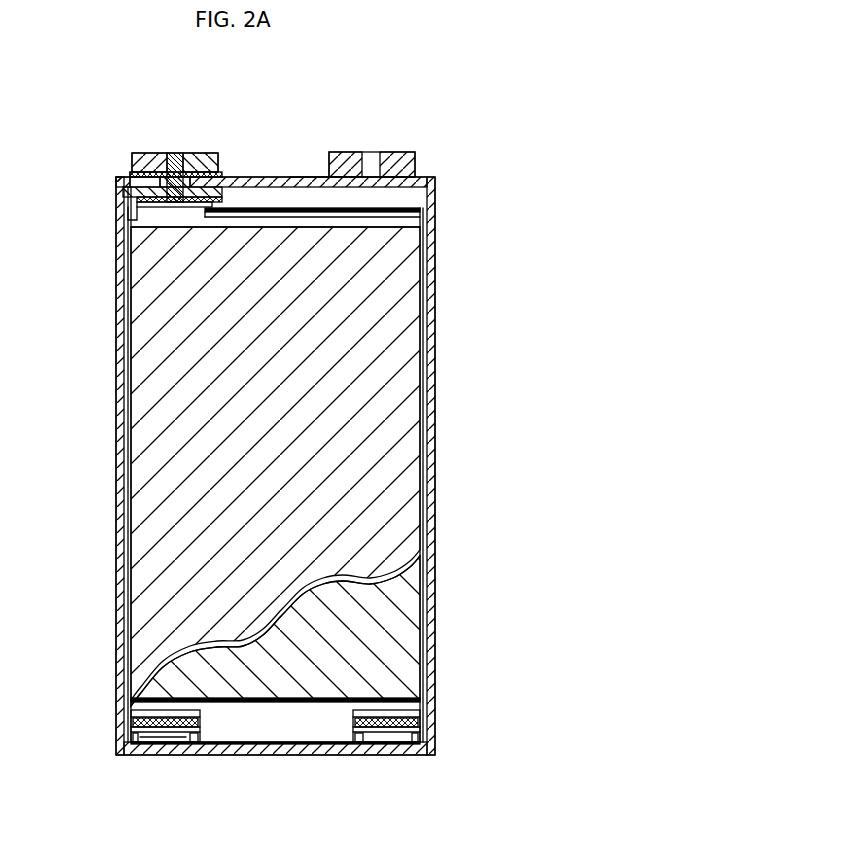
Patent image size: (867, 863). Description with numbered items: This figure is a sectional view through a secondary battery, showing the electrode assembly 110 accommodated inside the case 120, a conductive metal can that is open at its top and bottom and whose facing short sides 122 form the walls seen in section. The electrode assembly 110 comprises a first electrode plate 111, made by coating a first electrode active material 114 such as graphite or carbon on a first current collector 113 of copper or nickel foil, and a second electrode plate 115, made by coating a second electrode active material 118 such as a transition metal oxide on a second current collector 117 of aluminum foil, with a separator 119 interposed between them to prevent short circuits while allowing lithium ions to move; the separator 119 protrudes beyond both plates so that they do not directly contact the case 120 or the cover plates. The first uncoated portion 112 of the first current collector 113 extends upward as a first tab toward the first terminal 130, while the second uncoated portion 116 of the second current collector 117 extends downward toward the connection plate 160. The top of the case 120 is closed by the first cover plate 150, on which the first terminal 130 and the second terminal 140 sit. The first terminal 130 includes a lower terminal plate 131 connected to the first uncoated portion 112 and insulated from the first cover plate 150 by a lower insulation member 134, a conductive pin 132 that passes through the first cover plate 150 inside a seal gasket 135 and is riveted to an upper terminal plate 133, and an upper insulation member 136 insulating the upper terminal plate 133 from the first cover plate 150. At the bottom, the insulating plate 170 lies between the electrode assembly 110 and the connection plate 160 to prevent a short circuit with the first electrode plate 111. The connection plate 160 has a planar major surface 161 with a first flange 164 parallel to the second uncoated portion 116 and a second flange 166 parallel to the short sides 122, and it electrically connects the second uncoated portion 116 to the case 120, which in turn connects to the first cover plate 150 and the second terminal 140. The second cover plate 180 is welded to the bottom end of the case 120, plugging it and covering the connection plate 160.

The electrode assembly 110 is at (436, 477).
The first electrode plate 111 is at (405, 295).
The first uncoated portion 112 is at (210, 182).
The first current collector 113 is at (410, 222).
The first electrode active material 114 is at (403, 311).
The second electrode plate 115 is at (398, 604).
The second uncoated portion 116 is at (279, 750).
The second current collector 117 is at (418, 706).
The second electrode active material 118 is at (405, 637).
The separator 119 is at (413, 210).
The case 120 is at (337, 471).
The short sides 122 is at (423, 420).
The first terminal 130 is at (139, 164).
The lower terminal plate 131 is at (177, 207).
The conductive pin 132 is at (175, 154).
The upper terminal plate 133 is at (203, 160).
The lower insulation member 134 is at (130, 192).
The seal gasket 135 is at (160, 180).
The upper insulation member 136 is at (131, 175).
The second terminal 140 is at (402, 150).
The first cover plate 150 is at (313, 179).
The connection plate 160 is at (135, 776).
The major surface 161 is at (150, 734).
The first flange 164 is at (211, 774).
The second flange 166 is at (137, 741).
The insulating plate 170 is at (137, 723).
The second cover plate 180 is at (366, 750).